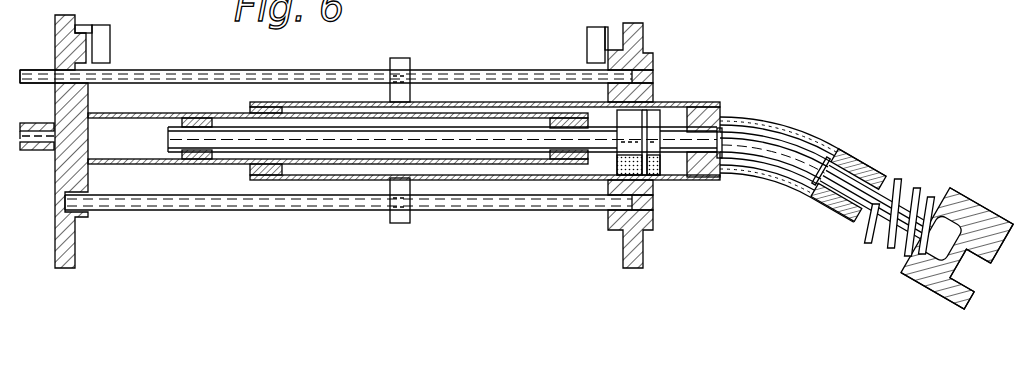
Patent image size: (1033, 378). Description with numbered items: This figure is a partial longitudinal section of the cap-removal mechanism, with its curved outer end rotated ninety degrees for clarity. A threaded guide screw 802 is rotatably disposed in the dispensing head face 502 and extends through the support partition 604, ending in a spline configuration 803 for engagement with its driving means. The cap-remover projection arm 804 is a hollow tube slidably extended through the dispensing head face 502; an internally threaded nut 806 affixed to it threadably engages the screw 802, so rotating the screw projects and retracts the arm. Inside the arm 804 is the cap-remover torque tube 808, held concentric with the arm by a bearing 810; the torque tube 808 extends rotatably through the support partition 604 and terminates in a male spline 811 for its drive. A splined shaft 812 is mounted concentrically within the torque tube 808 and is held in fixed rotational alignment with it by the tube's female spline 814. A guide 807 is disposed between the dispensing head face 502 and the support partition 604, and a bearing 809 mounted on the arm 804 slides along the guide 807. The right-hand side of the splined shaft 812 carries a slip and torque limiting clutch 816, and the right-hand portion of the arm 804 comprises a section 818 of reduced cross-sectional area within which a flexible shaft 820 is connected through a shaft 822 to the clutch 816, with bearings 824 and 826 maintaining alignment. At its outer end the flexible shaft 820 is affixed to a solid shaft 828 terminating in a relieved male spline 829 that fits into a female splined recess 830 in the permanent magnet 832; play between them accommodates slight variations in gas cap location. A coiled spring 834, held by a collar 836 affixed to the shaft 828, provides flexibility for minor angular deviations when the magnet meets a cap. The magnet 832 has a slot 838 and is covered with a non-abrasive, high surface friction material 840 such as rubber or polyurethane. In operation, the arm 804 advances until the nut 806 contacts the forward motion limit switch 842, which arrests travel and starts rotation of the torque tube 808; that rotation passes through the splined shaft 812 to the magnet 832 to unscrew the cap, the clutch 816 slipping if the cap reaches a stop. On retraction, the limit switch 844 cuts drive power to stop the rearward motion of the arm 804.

The dispensing head face 502 is at (645, 40).
The support partition 604 is at (52, 38).
The threaded guide screw 802 is at (299, 70).
The spline configuration 803 is at (27, 84).
The cap-remover projection arm 804 is at (470, 102).
The internally threaded nut 806 is at (400, 58).
The guide 807 is at (282, 211).
The cap-remover torque tube 808 is at (163, 112).
The bearing 809 is at (412, 221).
The bearing 810 is at (250, 104).
The male spline 811 is at (33, 151).
The splined shaft 812 is at (168, 139).
The female spline 814 is at (548, 162).
The slip and torque limiting clutch 816 is at (635, 120).
The section of reduced cross-sectional area 818 is at (754, 118).
The flexible shaft 820 is at (785, 141).
The shaft 822 is at (677, 153).
The bearing 824 is at (720, 118).
The bearing 826 is at (836, 158).
The solid shaft 828 is at (822, 187).
The relieved male spline 829 is at (901, 233).
The female splined recess 830 is at (940, 243).
The permanent magnet 832 is at (977, 217).
The coiled spring 834 is at (910, 187).
The collar 836 is at (863, 227).
The slot 838 is at (983, 263).
The non-abrasive high surface friction material 840 is at (940, 291).
The forward motion limit switch 842 is at (590, 46).
The limit switch 844 is at (112, 45).